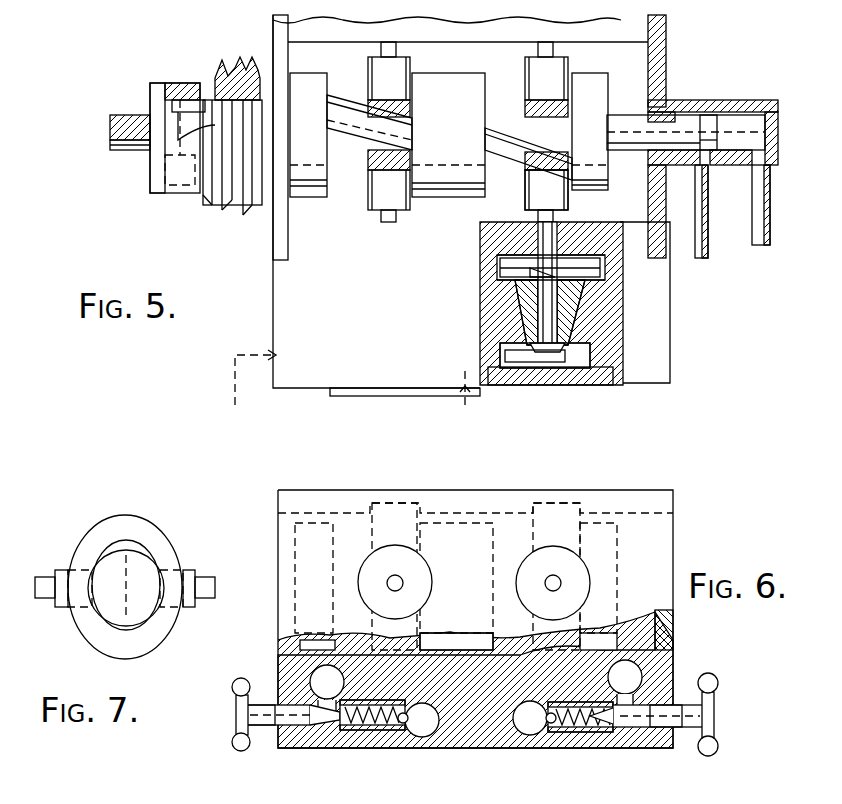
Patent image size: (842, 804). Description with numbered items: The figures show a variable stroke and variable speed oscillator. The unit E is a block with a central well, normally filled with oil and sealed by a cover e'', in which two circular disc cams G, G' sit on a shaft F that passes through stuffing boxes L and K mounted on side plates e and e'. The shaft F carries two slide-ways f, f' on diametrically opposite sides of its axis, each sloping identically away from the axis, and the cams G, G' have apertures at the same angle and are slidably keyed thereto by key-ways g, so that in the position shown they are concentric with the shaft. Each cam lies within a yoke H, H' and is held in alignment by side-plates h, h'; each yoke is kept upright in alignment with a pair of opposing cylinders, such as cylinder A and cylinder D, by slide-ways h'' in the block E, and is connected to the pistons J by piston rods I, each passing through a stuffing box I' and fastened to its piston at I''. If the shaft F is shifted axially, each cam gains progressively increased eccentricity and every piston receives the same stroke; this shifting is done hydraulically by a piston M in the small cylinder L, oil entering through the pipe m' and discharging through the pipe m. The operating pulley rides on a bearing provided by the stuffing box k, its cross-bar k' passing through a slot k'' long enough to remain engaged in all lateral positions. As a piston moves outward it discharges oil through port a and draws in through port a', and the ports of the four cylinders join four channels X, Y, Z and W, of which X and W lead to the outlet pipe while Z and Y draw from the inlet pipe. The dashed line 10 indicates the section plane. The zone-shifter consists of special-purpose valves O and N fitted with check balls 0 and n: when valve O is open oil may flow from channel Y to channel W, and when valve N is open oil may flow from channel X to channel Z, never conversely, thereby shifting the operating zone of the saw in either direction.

In FIG. 5, the stuffing box k is at (238, 64).
In FIG. 5, the cross-bar k' is at (158, 128).
In FIG. 5, the slot k'' is at (157, 116).
In FIG. 5, the shaft F is at (112, 132).
In FIG. 5, the stuffing box K is at (215, 205).
In FIG. 5, the side plate e is at (262, 149).
In FIG. 5, the side plate e' is at (675, 136).
In FIG. 5, the unit block E is at (660, 375).
In FIG. 6, the unit block E is at (680, 650).
In FIG. 5, the stuffing box and small cylinder L is at (690, 103).
In FIG. 5, the piston M is at (718, 128).
In FIG. 5, the pipe m is at (710, 234).
In FIG. 5, the pipe m' is at (759, 230).
In FIG. 5, the slide-way f is at (625, 144).
In FIG. 5, the slide-way f' is at (369, 111).
In FIG. 5, the key-way g is at (412, 112).
In FIG. 5, the cam G is at (536, 97).
In FIG. 7, the cam G is at (153, 595).
In FIG. 5, the cam G' is at (375, 162).
In FIG. 5, the yoke H is at (533, 71).
In FIG. 7, the yoke H is at (125, 595).
In FIG. 5, the yoke H' is at (402, 71).
In FIG. 5, the side-plate h is at (458, 196).
In FIG. 5, the side-plate h' is at (529, 192).
In FIG. 7, the side-plate h' is at (133, 571).
In FIG. 6, the slide-way h'' is at (456, 621).
In FIG. 5, the piston rod I is at (401, 236).
In FIG. 6, the piston rod I is at (397, 573).
In FIG. 5, the stuffing box I' is at (495, 287).
In FIG. 5, the piston rod fastening I'' is at (554, 396).
In FIG. 5, the piston J is at (505, 315).
In FIG. 5, the cylinder A is at (605, 270).
In FIG. 6, the cylinder A is at (588, 562).
In FIG. 5, the port a is at (540, 383).
In FIG. 5, the port a' is at (572, 261).
In FIG. 5, the section line 10 is at (353, 389).
In FIG. 6, the cylinder D is at (366, 560).
In FIG. 6, the cover e'' is at (494, 565).
In FIG. 6, the channel W is at (327, 688).
In FIG. 6, the channel X is at (530, 718).
In FIG. 6, the channel Y is at (422, 720).
In FIG. 6, the channel Z is at (625, 686).
In FIG. 6, the valve O is at (246, 720).
In FIG. 6, the check ball 0 is at (375, 730).
In FIG. 6, the check ball n is at (560, 732).
In FIG. 6, the valve N is at (720, 710).